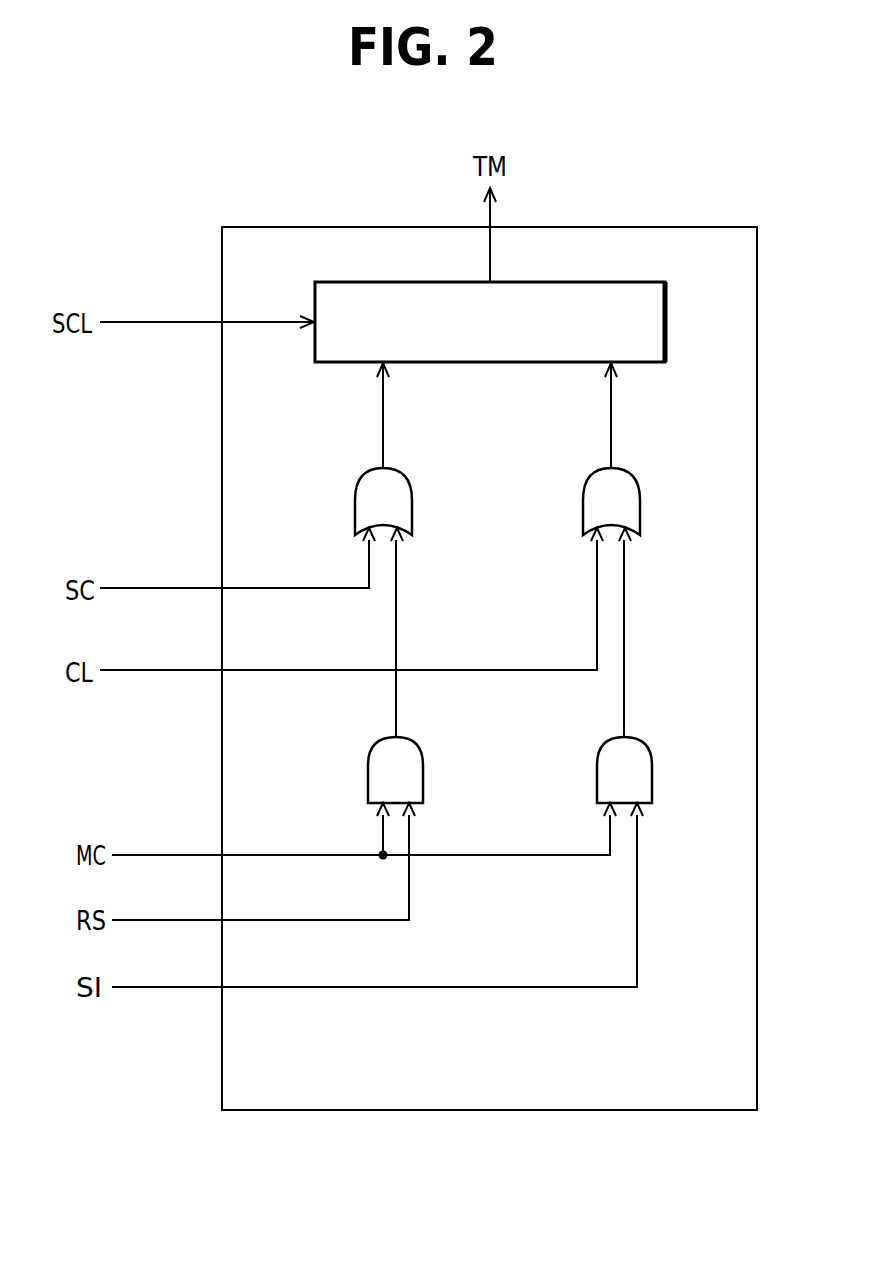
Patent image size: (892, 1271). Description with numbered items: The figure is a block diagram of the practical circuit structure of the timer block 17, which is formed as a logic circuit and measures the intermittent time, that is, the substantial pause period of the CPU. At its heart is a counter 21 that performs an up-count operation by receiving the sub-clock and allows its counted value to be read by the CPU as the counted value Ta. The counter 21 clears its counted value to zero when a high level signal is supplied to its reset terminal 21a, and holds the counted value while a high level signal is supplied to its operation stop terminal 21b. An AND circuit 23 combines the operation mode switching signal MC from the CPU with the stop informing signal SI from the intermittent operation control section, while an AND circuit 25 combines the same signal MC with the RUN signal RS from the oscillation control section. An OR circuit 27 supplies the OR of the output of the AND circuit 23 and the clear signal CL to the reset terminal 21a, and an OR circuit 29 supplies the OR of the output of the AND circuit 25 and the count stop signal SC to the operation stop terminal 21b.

The timer block 17 is at (650, 227).
The counter 21 is at (612, 282).
The reset terminal 21a is at (611, 437).
The operation stop terminal 21b is at (383, 430).
The AND circuit 23 is at (652, 765).
The AND circuit 25 is at (368, 775).
The OR circuit 27 is at (640, 512).
The OR circuit 29 is at (355, 508).